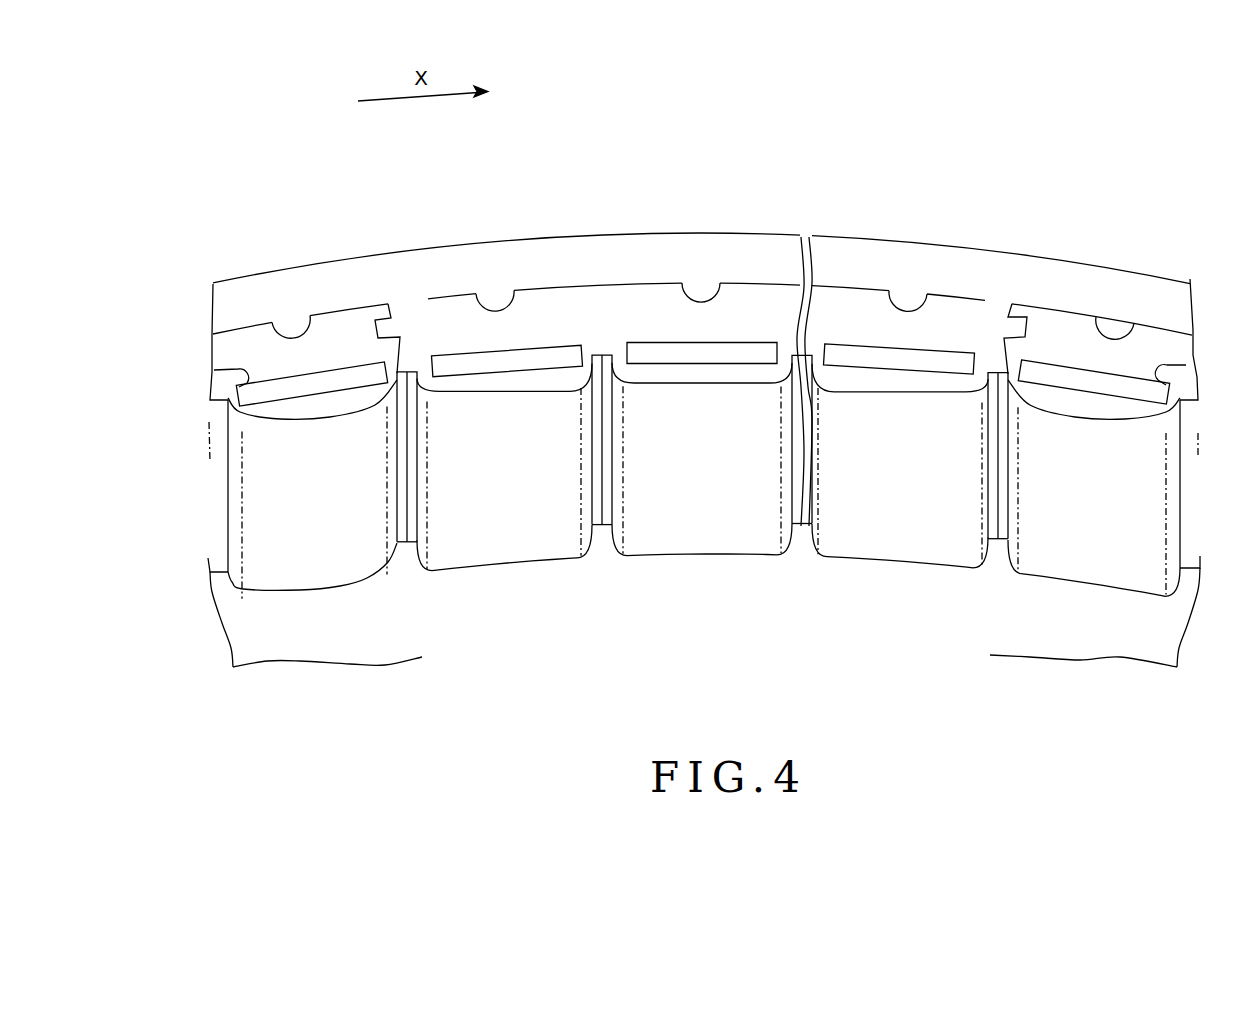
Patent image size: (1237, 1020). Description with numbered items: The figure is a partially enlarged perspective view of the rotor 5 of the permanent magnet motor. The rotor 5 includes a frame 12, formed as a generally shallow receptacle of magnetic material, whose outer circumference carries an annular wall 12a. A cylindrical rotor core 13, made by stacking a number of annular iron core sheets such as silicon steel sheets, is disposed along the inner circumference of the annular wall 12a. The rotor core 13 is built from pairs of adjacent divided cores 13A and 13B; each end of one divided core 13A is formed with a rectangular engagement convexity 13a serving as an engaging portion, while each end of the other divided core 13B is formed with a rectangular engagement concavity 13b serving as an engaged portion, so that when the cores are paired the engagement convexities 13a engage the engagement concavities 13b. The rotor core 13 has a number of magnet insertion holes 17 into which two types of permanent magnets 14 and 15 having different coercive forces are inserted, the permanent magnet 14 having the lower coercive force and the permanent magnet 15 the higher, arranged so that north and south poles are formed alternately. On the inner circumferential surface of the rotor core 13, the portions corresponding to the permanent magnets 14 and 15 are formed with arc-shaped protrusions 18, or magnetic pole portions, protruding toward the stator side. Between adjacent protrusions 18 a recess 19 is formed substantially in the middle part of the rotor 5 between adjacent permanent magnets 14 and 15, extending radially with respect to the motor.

The rotor 5 is at (867, 226).
The frame 12 is at (1125, 637).
The annular wall 12a is at (1005, 318).
The rotor core 13 is at (785, 238).
The divided core 13A is at (630, 306).
The divided core 13B is at (267, 347).
The engagement convexity 13a is at (353, 306).
The engagement concavity 13b is at (393, 334).
The permanent magnet 14 is at (550, 305).
The permanent magnet 15 is at (337, 367).
The magnet insertion hole 17 is at (214, 371).
The protrusion 18 is at (512, 547).
The recess 19 is at (415, 368).